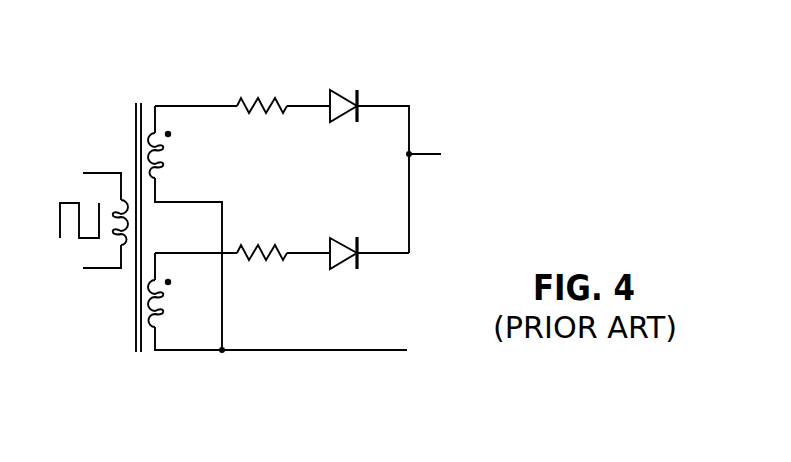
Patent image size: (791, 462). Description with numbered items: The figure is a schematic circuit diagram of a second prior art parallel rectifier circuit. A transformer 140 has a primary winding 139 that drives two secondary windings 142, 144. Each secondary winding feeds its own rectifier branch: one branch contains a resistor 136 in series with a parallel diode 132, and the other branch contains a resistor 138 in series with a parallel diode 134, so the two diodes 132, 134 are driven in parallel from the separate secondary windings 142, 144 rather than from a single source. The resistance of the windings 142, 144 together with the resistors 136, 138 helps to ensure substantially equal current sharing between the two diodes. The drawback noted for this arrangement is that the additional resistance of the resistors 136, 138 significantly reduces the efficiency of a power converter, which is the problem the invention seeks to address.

The parallel diode 132 is at (340, 91).
The parallel diode 134 is at (342, 268).
The resistor 136 is at (253, 97).
The resistor 138 is at (253, 258).
The primary winding 139 is at (98, 268).
The transformer 140 is at (137, 103).
The secondary winding 142 is at (165, 166).
The secondary winding 144 is at (165, 311).